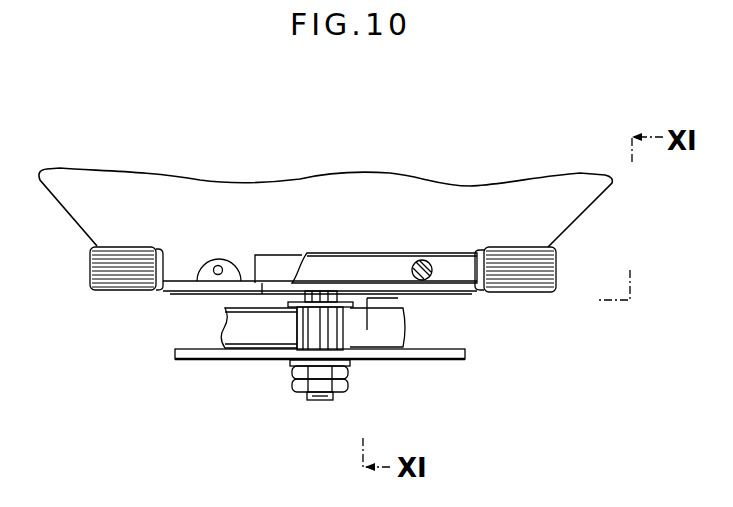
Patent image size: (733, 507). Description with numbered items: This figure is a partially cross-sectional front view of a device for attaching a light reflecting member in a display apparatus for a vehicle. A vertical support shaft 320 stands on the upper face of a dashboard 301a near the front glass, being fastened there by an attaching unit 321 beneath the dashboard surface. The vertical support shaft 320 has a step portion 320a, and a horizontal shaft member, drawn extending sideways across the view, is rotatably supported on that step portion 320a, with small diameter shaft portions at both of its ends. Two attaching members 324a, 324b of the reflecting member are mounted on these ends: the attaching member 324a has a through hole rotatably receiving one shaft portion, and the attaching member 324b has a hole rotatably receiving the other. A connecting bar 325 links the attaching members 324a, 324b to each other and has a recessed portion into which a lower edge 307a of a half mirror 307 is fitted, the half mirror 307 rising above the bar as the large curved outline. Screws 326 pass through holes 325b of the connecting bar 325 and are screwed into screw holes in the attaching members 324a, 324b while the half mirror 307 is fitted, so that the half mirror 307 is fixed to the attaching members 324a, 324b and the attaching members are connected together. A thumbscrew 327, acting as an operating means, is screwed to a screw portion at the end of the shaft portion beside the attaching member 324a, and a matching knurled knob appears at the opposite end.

The half mirror 307 is at (218, 188).
The lower edge of half mirror 307a is at (263, 265).
The connecting bar 325 is at (322, 265).
The holes of connecting bar 325b is at (210, 262).
The screws 326 is at (423, 259).
The attaching member 324a is at (456, 293).
The attaching member 324b is at (172, 293).
The thumbscrew 327 is at (550, 293).
The vertical support shaft 320 is at (310, 394).
The step portion 320a is at (292, 298).
The attaching unit 321 is at (348, 370).
The dashboard 301a is at (402, 333).